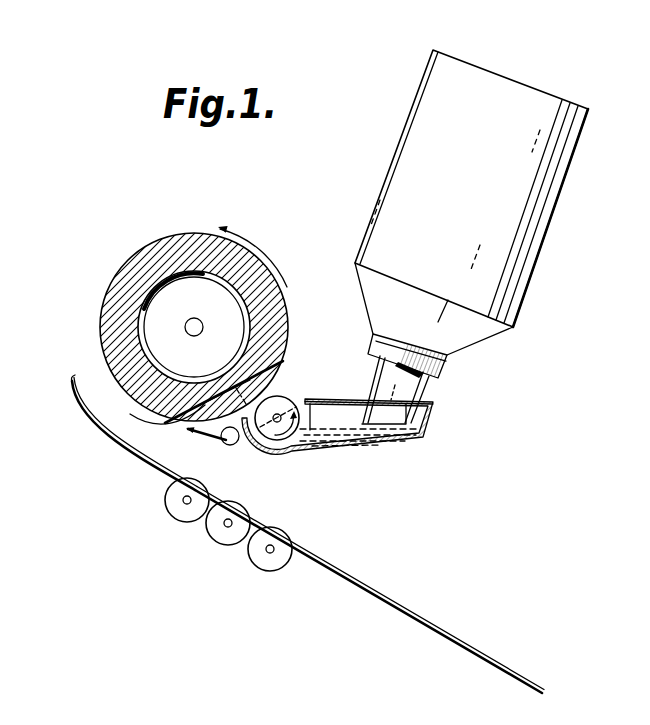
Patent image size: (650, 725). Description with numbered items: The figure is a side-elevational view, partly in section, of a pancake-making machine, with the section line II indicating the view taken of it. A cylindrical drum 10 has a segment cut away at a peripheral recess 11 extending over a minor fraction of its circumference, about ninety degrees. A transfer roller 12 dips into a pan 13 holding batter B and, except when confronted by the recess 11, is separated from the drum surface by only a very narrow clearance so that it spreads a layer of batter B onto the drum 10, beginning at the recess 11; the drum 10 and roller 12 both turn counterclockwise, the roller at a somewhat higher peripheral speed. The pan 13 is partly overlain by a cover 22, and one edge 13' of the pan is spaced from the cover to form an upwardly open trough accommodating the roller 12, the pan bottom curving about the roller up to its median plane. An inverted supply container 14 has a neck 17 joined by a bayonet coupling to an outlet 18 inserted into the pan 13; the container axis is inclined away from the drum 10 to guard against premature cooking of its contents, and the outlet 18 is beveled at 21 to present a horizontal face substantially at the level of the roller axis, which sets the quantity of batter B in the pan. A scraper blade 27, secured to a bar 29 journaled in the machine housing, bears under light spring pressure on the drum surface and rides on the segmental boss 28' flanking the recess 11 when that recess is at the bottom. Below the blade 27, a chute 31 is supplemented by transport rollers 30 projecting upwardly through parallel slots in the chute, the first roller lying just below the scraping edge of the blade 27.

The drum 10 is at (272, 296).
The peripheral recess 11 is at (256, 389).
The transfer roller 12 is at (282, 439).
The pan 13 is at (357, 438).
The pan edge 13' is at (241, 392).
The supply container 14 is at (540, 218).
The neck 17 is at (448, 356).
The outlet 18 is at (405, 384).
The beveled face 21 is at (440, 410).
The cover 22 is at (328, 399).
The scraper blade 27 is at (187, 441).
The segmental boss 28' is at (138, 432).
The bar 29 is at (230, 447).
The transport rollers 30 is at (163, 503).
The chute 31 is at (311, 548).
The batter B is at (343, 437).
The section line II- II is at (92, 324).